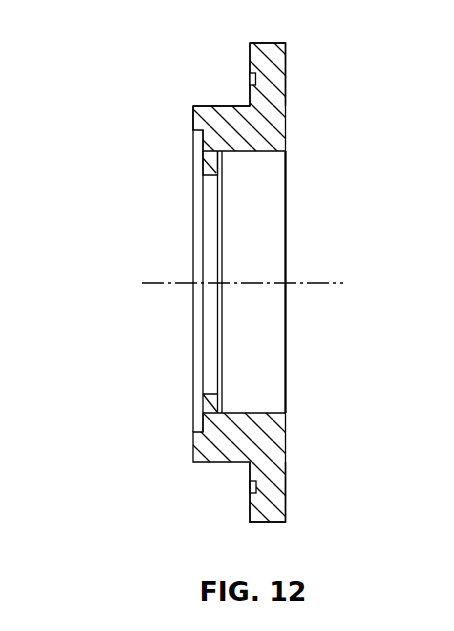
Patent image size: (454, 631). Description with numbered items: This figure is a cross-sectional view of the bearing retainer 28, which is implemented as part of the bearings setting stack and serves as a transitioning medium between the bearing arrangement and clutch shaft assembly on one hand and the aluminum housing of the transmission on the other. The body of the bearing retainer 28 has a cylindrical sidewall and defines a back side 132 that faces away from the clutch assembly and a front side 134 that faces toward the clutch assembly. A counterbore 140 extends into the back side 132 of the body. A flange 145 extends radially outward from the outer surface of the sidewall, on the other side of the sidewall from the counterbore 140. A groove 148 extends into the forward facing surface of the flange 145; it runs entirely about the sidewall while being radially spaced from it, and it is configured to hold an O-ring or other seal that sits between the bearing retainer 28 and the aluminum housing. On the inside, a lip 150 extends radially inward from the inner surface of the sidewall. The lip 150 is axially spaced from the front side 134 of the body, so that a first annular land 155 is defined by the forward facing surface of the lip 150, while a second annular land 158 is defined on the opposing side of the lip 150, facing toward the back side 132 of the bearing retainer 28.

The bearing retainer 28 is at (155, 319).
The back side 132 is at (301, 493).
The front side 134 is at (246, 502).
The counterbore 140 is at (267, 385).
The flange 145 is at (286, 73).
The groove 148 is at (249, 79).
The lip 150 is at (222, 392).
The first annular land 155 is at (192, 121).
The second annular land 158 is at (218, 161).